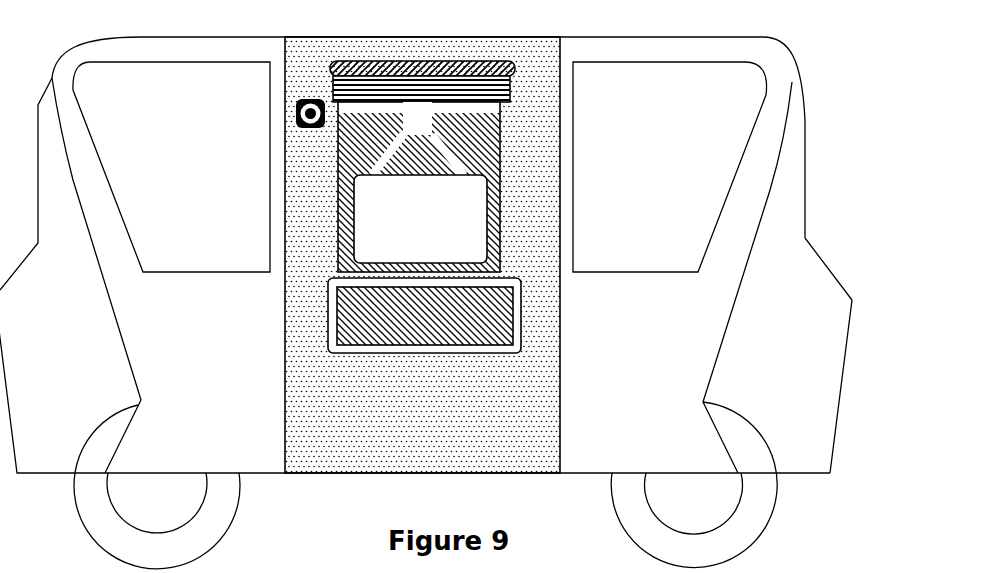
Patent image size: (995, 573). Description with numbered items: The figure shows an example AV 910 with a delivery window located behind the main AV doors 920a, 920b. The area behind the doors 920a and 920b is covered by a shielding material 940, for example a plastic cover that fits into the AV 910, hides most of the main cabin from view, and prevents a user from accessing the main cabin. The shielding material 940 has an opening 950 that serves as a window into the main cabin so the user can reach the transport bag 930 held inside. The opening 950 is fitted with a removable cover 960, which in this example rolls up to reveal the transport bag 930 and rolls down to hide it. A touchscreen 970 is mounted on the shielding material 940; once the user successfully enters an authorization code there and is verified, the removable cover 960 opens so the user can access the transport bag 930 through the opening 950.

The AV 910 is at (797, 157).
The door 920a is at (168, 53).
The door 920b is at (700, 50).
The transport bag 930 is at (482, 223).
The shielding material 940 is at (302, 342).
The opening 950 is at (500, 140).
The removable cover 960 is at (430, 63).
The touchscreen 970 is at (510, 323).